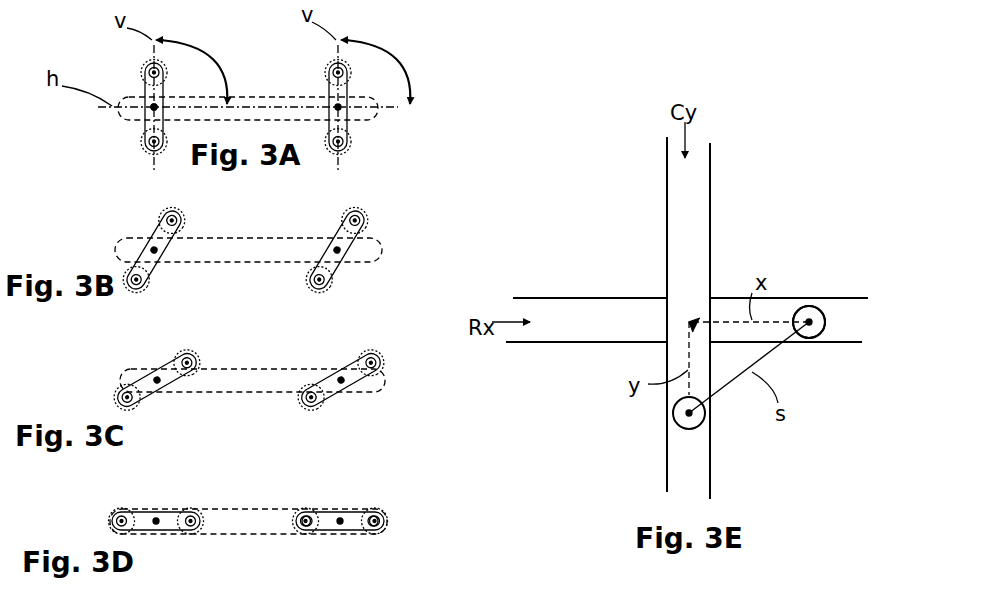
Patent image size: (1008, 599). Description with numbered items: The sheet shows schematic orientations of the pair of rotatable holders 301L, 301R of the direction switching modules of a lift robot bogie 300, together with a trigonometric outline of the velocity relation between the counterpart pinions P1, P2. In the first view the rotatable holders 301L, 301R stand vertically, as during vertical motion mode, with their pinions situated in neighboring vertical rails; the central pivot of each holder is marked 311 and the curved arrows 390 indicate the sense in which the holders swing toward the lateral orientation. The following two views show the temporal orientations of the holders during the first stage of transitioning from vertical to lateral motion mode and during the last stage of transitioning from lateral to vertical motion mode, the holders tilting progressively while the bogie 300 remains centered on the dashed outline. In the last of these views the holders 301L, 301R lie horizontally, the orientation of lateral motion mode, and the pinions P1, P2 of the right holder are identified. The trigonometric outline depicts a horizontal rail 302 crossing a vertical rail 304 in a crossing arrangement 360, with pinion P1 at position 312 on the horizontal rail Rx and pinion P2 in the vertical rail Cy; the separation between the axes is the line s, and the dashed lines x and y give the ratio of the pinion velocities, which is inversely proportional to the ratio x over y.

In FIG. 3A, the lift robot bogie 300 is at (272, 96).
In FIG. 3B, the lift robot bogie 300 is at (257, 238).
In FIG. 3C, the lift robot bogie 300 is at (258, 368).
In FIG. 3D, the lift robot bogie 300 is at (249, 508).
In FIG. 3A, the rotatable holder 301L is at (142, 122).
In FIG. 3B, the rotatable holder 301L is at (150, 244).
In FIG. 3C, the rotatable holder 301L is at (166, 372).
In FIG. 3D, the rotatable holder 301L is at (176, 512).
In FIG. 3A, the rotatable holder 301R is at (345, 122).
In FIG. 3B, the rotatable holder 301R is at (366, 246).
In FIG. 3C, the rotatable holder 301R is at (360, 378).
In FIG. 3D, the rotatable holder 301R is at (354, 520).
In FIG. 3A, the central pivot hole 311 is at (150, 104).
In FIG. 3A, the rotation direction arrow 390 is at (206, 42).
In FIG. 3E, the horizontal guide slot 302 is at (848, 345).
In FIG. 3E, the vertical guide slot 304 is at (712, 481).
In FIG. 3E, the pivot pin position P1 312 is at (830, 322).
In FIG. 3E, the guide cross arrangement 360 is at (818, 203).
In FIG. 3D, the pinion P1 is at (376, 534).
In FIG. 3E, the pinion P1 is at (826, 305).
In FIG. 3D, the pinion P2 is at (308, 536).
In FIG. 3E, the pinion P2 is at (672, 418).